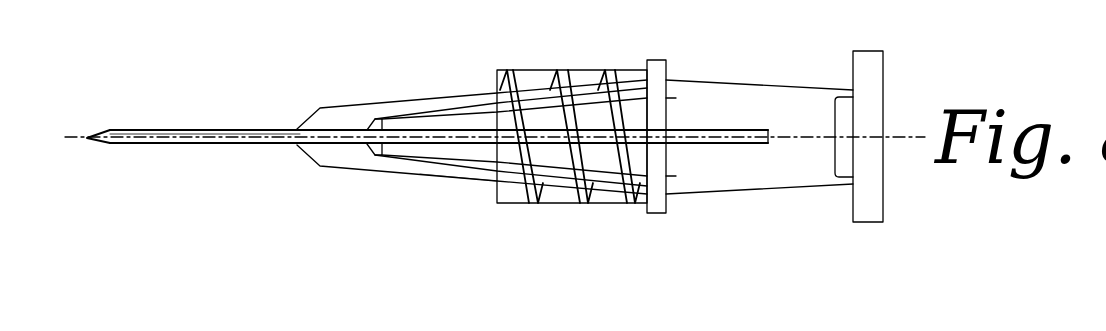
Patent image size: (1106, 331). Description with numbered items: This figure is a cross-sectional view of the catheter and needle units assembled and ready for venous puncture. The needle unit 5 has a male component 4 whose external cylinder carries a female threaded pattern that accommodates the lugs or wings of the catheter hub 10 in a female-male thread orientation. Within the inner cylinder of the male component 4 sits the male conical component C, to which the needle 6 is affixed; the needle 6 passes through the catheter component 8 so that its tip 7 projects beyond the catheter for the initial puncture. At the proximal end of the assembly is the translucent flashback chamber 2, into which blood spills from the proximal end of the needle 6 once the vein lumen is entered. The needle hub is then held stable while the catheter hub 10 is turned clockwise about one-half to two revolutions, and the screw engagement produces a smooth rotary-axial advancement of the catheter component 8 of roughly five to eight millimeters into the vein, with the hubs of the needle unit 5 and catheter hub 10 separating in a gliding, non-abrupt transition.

The flashback chamber 2 is at (813, 157).
The male component of the needle unit 4 is at (665, 220).
The needle unit 5 is at (847, 52).
The needle 6 is at (770, 138).
The needle tip 7 is at (91, 137).
The catheter component 8 is at (172, 129).
The catheter hub 10 is at (492, 83).
The male conical component C is at (462, 178).